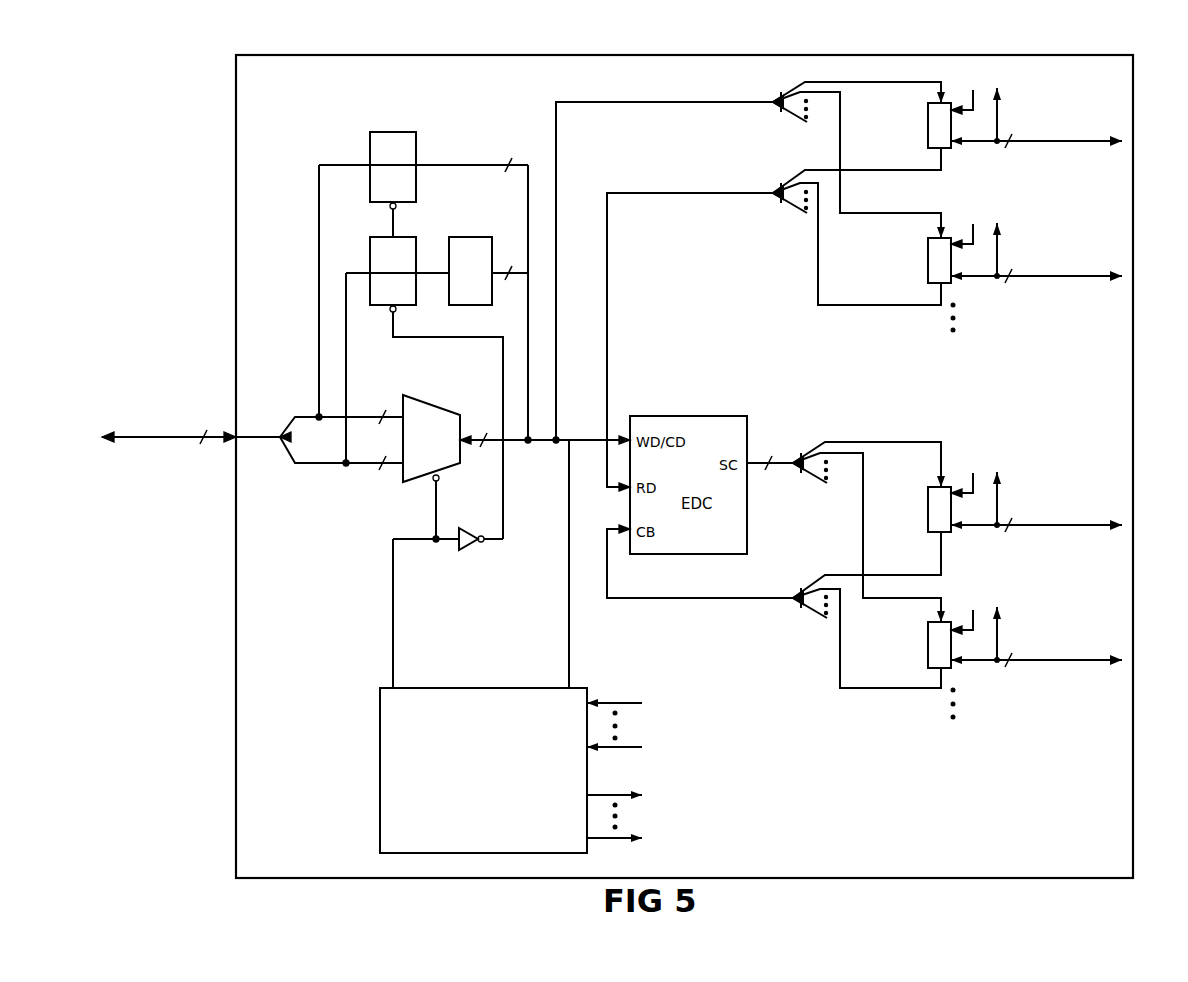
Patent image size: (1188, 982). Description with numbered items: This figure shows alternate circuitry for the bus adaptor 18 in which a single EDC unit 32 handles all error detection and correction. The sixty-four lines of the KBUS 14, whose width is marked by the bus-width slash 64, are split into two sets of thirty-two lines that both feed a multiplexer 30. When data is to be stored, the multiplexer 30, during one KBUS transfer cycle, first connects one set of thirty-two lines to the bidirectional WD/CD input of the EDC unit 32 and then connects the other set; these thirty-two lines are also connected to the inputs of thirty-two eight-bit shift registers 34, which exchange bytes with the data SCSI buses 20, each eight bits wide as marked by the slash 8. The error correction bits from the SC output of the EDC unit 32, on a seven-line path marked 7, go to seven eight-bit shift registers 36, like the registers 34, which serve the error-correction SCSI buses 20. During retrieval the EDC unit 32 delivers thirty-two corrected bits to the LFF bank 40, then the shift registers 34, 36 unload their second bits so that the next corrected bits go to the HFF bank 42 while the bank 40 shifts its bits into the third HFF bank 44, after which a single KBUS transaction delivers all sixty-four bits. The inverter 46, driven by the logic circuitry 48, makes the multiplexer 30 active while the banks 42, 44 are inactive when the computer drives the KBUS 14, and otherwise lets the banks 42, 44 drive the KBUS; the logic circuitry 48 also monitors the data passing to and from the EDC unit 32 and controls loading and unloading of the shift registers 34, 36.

The parallel bus (KBUS) 14 is at (131, 409).
The 64-bit bus width 64 is at (199, 452).
The bus adaptor 18 is at (1133, 806).
The multiplexer 30 is at (440, 405).
The EDC unit 32 is at (721, 577).
The bank of flip-flops (LFF) 40 is at (466, 237).
The bank of flip-flops (HFF) 42 is at (400, 132).
The third bank of flip-flops (HFF) 44 is at (403, 237).
The inverter 46 is at (468, 551).
The logic circuitry 48 is at (567, 853).
The eight-bit shift registers 34 is at (928, 127).
The eight-bit shift registers 36 is at (928, 511).
The parallel buses (SCSI buses) 20 is at (978, 146).
The 8-bit bus width 8 is at (1008, 410).
The 7-bit syndrome bus width 7 is at (770, 474).